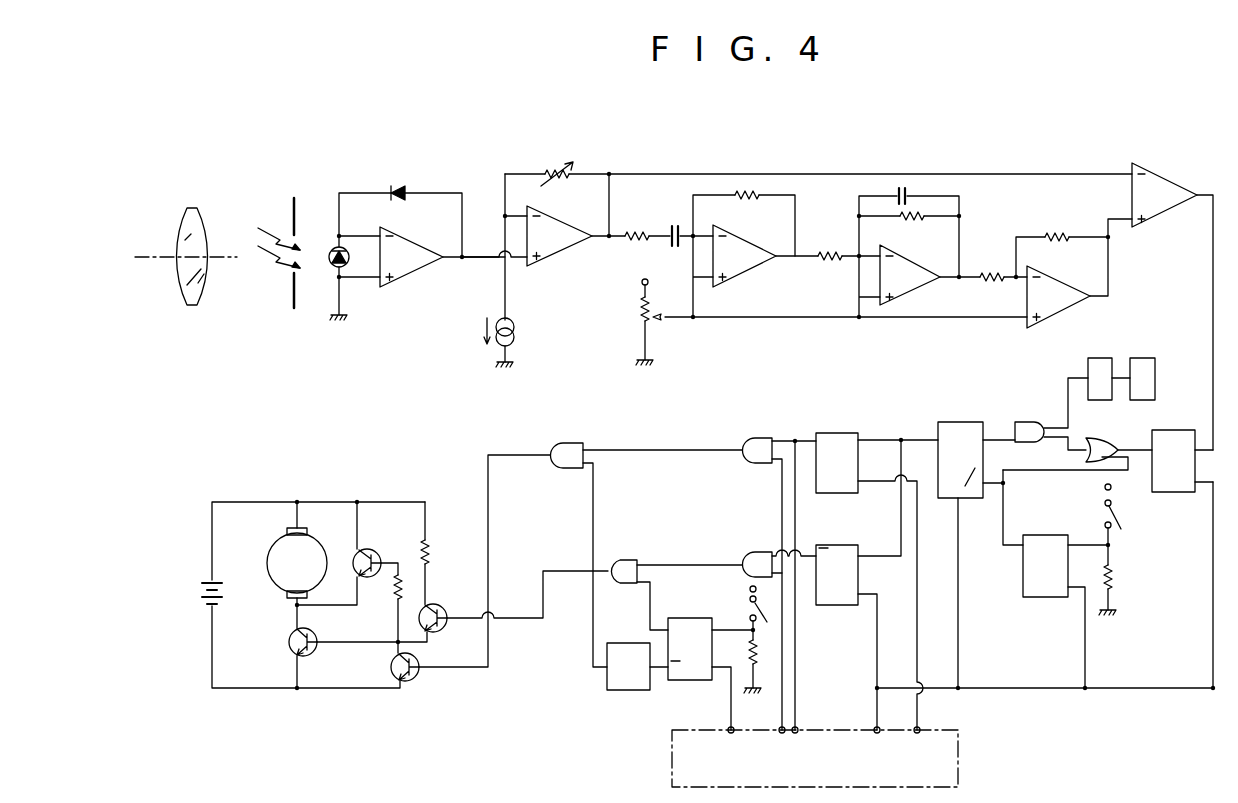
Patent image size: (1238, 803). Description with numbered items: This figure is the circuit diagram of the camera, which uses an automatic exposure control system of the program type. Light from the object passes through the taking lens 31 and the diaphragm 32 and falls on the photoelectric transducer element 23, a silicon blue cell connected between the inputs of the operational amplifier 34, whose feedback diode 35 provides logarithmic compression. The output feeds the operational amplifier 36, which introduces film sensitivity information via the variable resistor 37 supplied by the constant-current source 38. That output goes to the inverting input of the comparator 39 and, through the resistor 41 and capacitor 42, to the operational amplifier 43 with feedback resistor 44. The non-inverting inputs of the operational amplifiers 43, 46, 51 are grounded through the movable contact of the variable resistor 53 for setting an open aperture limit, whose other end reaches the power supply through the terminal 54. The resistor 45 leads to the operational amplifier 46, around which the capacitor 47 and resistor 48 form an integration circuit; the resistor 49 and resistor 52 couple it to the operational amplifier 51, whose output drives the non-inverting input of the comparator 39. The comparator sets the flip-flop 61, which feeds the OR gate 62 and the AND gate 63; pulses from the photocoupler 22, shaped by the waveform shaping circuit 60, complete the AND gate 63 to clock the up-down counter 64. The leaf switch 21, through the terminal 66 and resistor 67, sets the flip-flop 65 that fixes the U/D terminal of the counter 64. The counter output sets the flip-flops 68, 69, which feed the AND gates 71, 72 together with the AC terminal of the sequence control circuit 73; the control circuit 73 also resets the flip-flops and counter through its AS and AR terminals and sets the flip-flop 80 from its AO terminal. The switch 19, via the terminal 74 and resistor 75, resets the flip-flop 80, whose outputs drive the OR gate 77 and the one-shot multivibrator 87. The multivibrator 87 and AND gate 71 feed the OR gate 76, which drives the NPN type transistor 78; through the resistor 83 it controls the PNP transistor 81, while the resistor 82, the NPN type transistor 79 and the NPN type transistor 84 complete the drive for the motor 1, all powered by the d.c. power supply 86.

The motor 1 is at (278, 548).
The switch 19 is at (752, 611).
The leaf switch 21 is at (1116, 520).
The photocoupler 22 is at (1142, 358).
The photoelectric transducer element 23 is at (330, 262).
The taking lens 31 is at (184, 222).
The diaphragm 32 is at (292, 212).
The operational amplifier 34 is at (418, 247).
The diode 35 is at (396, 191).
The operational amplifier 36 is at (562, 220).
The variable resistor 37 is at (556, 171).
The constant-current source 38 is at (512, 330).
The comparator 39 is at (1155, 180).
The resistor 41 is at (627, 233).
The capacitor 42 is at (675, 249).
The operational amplifier 43 is at (752, 256).
The resistor 44 is at (748, 199).
The resistor 45 is at (830, 254).
The operational amplifier 46 is at (914, 286).
The capacitor 47 is at (900, 185).
The resistor 48 is at (911, 219).
The resistor 49 is at (991, 274).
The operational amplifier 51 is at (1062, 288).
The resistor 52 is at (1056, 234).
The variable resistor 53 is at (640, 318).
The terminal 54 is at (641, 280).
The waveform shaping circuit 60 is at (1090, 358).
The flip-flop circuit 61 is at (1175, 492).
The OR gate 62 is at (1102, 439).
The AND gate 63 is at (1027, 421).
The up-down counter 64 is at (955, 421).
The flip-flop 65 is at (1044, 597).
The terminal 66 is at (1104, 487).
The resistor 67 is at (1113, 580).
The flip-flop 68 is at (830, 425).
The flip-flop 69 is at (836, 605).
The AND gate 71 is at (759, 438).
The AND gate 72 is at (753, 552).
The sequence control circuit 73 is at (958, 753).
The terminal 74 is at (749, 587).
The resistor 75 is at (748, 652).
The OR gate 76 is at (571, 446).
The OR gate 77 is at (634, 564).
The NPN type transistor 78 is at (391, 668).
The NPN type transistor 79 is at (438, 616).
The flip-flop 80 is at (692, 680).
The PNP transistor 81 is at (378, 560).
The resistor 82 is at (431, 546).
The resistor 83 is at (394, 596).
The NPN type transistor 84 is at (289, 647).
The d.c. power supply 86 is at (198, 594).
The one-shot multivibrator 87 is at (626, 690).